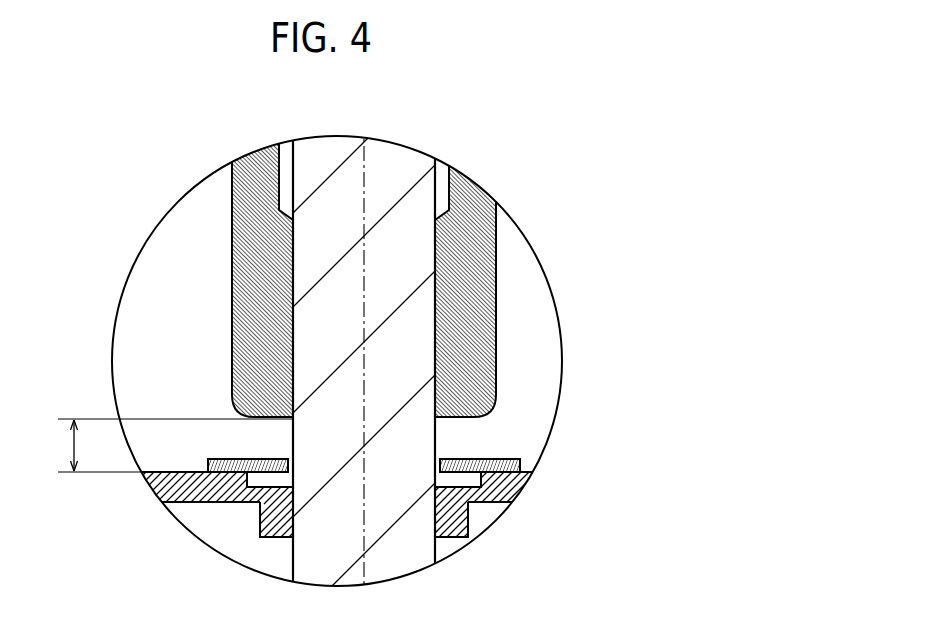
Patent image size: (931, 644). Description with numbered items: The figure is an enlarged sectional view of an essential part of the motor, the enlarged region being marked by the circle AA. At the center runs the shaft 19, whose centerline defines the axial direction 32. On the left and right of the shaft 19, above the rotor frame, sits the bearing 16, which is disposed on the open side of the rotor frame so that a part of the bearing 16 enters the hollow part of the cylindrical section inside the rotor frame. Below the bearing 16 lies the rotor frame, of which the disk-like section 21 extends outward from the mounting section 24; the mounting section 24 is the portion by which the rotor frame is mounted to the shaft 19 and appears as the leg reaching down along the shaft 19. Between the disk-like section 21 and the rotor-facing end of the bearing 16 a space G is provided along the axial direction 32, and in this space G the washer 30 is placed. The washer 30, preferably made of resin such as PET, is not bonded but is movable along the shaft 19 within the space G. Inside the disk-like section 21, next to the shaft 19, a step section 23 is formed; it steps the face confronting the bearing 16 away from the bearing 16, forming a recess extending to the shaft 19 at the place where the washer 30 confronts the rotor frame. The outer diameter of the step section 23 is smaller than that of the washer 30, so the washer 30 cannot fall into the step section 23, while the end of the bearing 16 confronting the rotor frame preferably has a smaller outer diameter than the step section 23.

The bearing 16 is at (247, 215).
The shaft 19 is at (320, 158).
The axial direction 32 is at (365, 180).
The washer 30 is at (235, 455).
The disk-like section 21 is at (168, 495).
The step section 23 is at (258, 480).
The mounting section 24 is at (260, 527).
The enlarged section view region AA is at (530, 243).
The space G is at (169, 445).